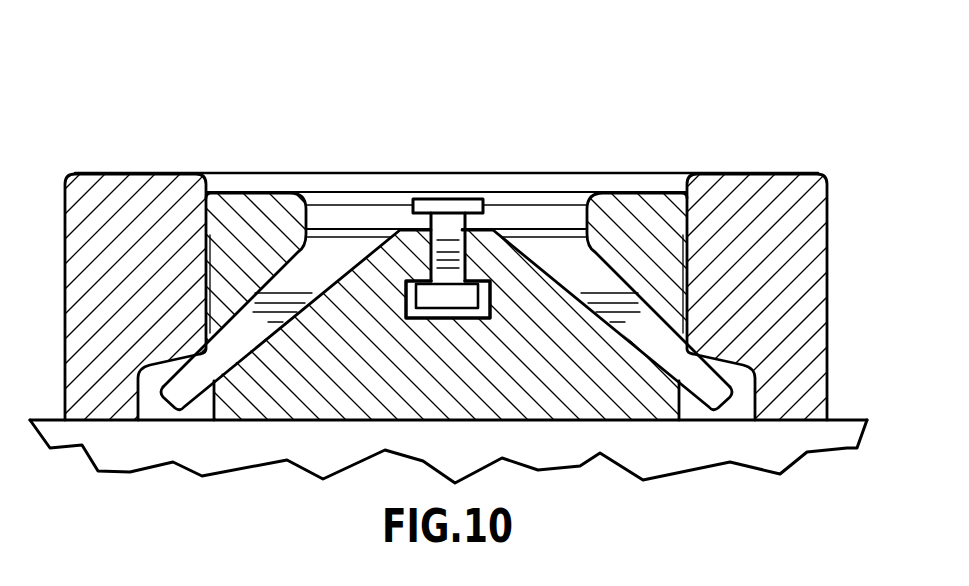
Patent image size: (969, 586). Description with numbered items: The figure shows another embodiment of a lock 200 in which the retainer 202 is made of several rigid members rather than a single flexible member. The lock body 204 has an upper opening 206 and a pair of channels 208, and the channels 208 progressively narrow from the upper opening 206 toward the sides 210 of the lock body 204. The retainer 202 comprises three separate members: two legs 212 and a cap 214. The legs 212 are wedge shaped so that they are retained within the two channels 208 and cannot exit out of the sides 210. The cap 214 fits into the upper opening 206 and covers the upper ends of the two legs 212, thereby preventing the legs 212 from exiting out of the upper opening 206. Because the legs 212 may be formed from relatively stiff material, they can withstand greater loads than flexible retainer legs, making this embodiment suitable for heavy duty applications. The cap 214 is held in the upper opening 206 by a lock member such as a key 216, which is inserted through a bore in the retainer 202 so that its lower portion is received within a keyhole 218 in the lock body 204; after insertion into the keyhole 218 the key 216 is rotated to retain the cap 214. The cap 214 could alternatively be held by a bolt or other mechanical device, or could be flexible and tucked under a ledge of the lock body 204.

The lock 200 is at (279, 140).
The retainer 202 is at (563, 197).
The lock body 204 is at (643, 195).
The upper opening 206 is at (512, 195).
The channels 208 is at (245, 270).
The sides 210 is at (205, 308).
The legs 212 is at (237, 343).
The cap 214 is at (357, 193).
The key 216 is at (445, 195).
The keyhole 218 is at (452, 322).